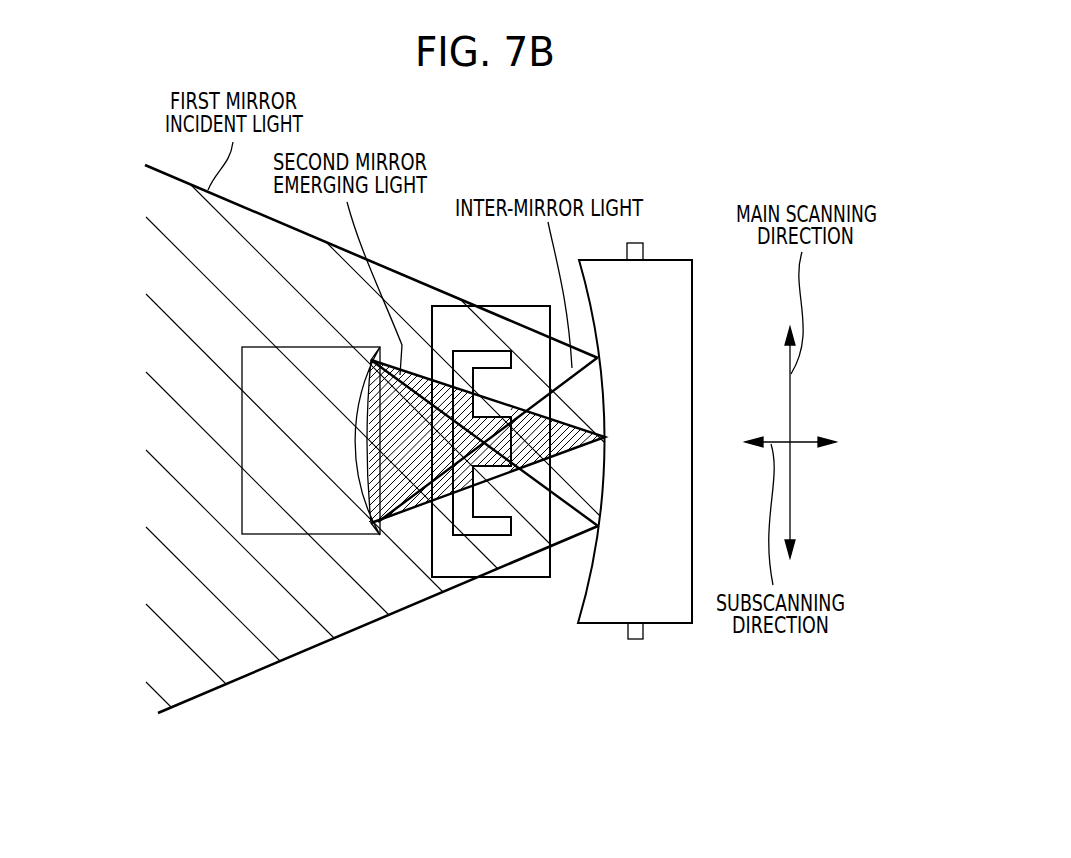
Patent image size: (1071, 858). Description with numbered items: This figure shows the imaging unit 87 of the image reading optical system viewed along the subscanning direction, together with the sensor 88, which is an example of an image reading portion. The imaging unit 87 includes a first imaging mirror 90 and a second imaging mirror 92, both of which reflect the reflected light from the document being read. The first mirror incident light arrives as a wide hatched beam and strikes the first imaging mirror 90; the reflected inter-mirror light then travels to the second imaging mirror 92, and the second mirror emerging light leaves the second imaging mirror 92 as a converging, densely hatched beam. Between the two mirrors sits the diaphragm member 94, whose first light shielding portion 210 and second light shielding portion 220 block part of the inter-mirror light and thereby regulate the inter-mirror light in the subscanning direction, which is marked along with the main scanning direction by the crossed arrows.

The imaging unit 87 is at (692, 138).
The sensor 88 is at (636, 645).
The first imaging mirror 90 is at (668, 258).
The second imaging mirror 92 is at (282, 535).
The diaphragm member 94 is at (485, 585).
The first light shielding portion 210 is at (448, 445).
The second light shielding portion 220 is at (517, 448).